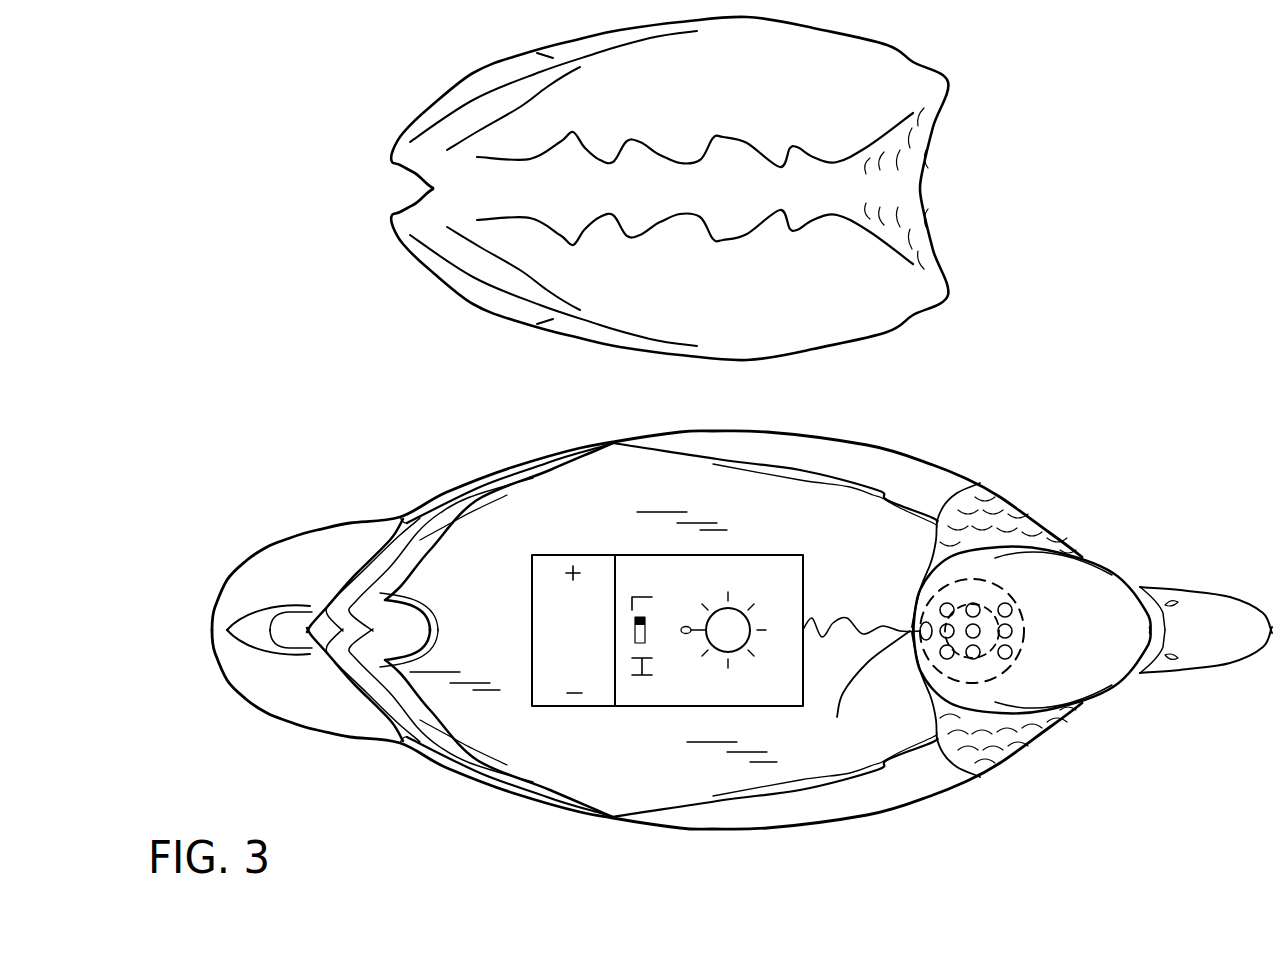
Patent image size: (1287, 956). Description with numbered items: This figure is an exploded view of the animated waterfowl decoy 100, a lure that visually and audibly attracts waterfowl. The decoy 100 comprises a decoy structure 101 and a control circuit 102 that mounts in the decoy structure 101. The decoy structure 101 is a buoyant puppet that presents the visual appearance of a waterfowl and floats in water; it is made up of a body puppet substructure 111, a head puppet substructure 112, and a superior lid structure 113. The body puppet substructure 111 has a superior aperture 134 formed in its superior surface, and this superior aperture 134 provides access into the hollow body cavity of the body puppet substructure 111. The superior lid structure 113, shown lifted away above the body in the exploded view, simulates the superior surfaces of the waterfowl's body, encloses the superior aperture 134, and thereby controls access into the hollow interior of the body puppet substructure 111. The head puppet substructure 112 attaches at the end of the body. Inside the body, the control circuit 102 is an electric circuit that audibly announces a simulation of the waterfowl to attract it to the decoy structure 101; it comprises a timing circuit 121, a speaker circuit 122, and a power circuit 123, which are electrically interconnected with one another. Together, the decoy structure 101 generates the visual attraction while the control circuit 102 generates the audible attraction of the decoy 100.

The animated waterfowl decoy 100 is at (668, 478).
The decoy structure 101 is at (668, 478).
The control circuit 102 is at (688, 747).
The body puppet substructure 111 is at (920, 800).
The head puppet substructure 112 is at (1110, 598).
The superior lid structure 113 is at (922, 193).
The timing circuit 121 is at (837, 717).
The speaker circuit 122 is at (710, 690).
The power circuit 123 is at (588, 703).
The superior aperture 134 is at (882, 512).